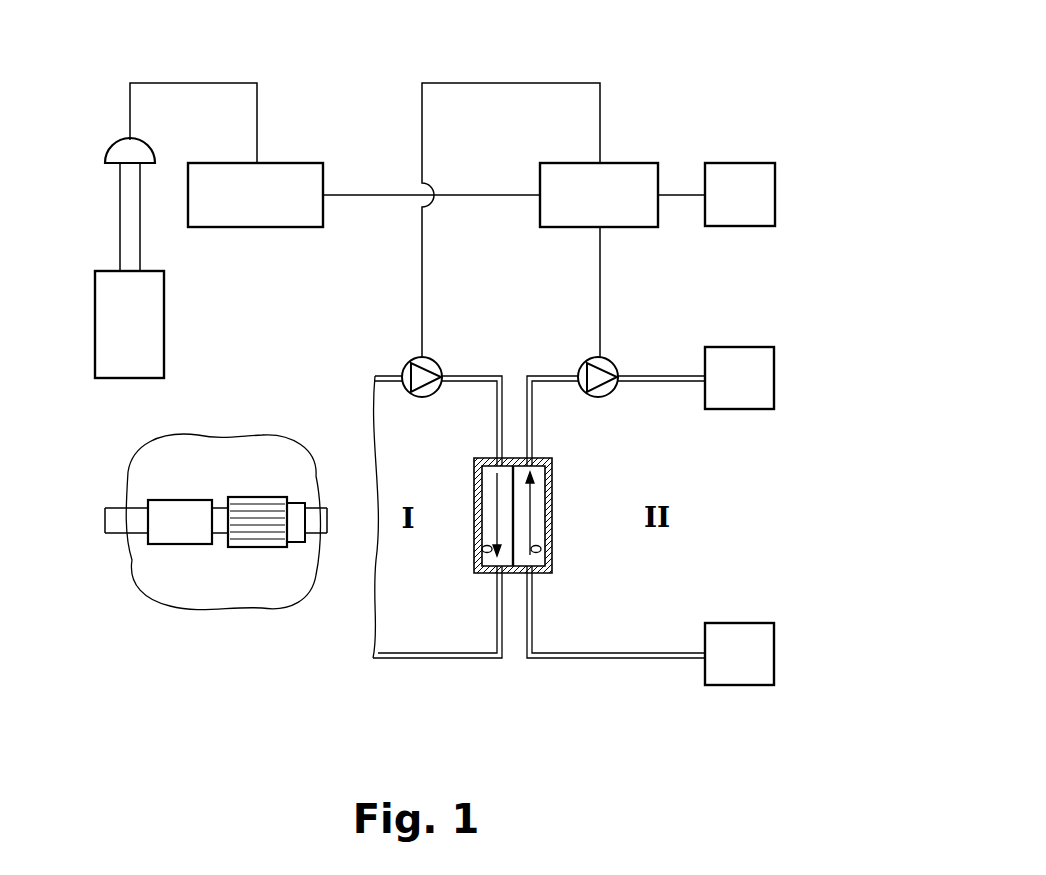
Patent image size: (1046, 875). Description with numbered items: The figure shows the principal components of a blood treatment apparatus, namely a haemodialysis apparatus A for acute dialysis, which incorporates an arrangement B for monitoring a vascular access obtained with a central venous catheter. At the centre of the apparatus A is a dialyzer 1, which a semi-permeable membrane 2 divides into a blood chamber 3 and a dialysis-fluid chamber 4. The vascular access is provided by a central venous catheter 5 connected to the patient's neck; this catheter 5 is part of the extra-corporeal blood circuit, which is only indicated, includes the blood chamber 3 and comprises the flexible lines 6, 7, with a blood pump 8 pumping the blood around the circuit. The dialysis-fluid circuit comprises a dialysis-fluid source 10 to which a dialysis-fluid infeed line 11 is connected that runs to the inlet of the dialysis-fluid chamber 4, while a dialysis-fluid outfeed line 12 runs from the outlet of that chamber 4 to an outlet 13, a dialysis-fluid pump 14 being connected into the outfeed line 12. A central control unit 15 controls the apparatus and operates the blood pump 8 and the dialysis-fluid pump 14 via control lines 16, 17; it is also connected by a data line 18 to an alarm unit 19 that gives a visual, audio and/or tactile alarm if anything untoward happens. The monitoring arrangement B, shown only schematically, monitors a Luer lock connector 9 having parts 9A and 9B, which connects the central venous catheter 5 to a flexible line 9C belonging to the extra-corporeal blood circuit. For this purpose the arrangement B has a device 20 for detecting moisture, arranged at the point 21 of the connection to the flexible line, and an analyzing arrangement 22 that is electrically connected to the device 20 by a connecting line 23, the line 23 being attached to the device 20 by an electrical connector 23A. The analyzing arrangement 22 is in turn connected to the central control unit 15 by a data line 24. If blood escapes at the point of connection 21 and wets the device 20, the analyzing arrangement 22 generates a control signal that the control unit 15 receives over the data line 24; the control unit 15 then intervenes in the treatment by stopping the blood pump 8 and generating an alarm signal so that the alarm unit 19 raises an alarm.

The dialyzer 1 is at (519, 482).
The semi-permeable membrane 2 is at (513, 504).
The blood chamber 3 is at (482, 551).
The dialysis-fluid chamber 4 is at (541, 551).
The central venous catheter 5 is at (105, 535).
The flexible line 6 is at (462, 375).
The flexible line 7 is at (428, 658).
The blood pump 8 is at (408, 363).
The Luer lock connector 9 is at (251, 520).
The connector part 9A is at (175, 508).
The connector part 9B is at (257, 508).
The flexible line 9C is at (322, 535).
The dialysis-fluid source 10 is at (728, 685).
The dialysis-fluid infeed line 11 is at (594, 658).
The dialysis-fluid outfeed line 12 is at (661, 382).
The outlet 13 is at (747, 347).
The dialysis-fluid pump 14 is at (598, 397).
The central control unit 15 is at (548, 227).
The control line 16 is at (508, 83).
The control line 17 is at (600, 298).
The data line 18 is at (680, 195).
The alarm unit 19 is at (747, 163).
The device for detecting moisture 20 is at (118, 357).
The point of connection 21 is at (233, 612).
The analyzing arrangement 22 is at (302, 163).
The connecting line 23 is at (194, 83).
The electrical connector 23A is at (117, 155).
The data line 24 is at (374, 195).
The haemodialysis apparatus A is at (698, 538).
The monitoring arrangement B is at (178, 318).